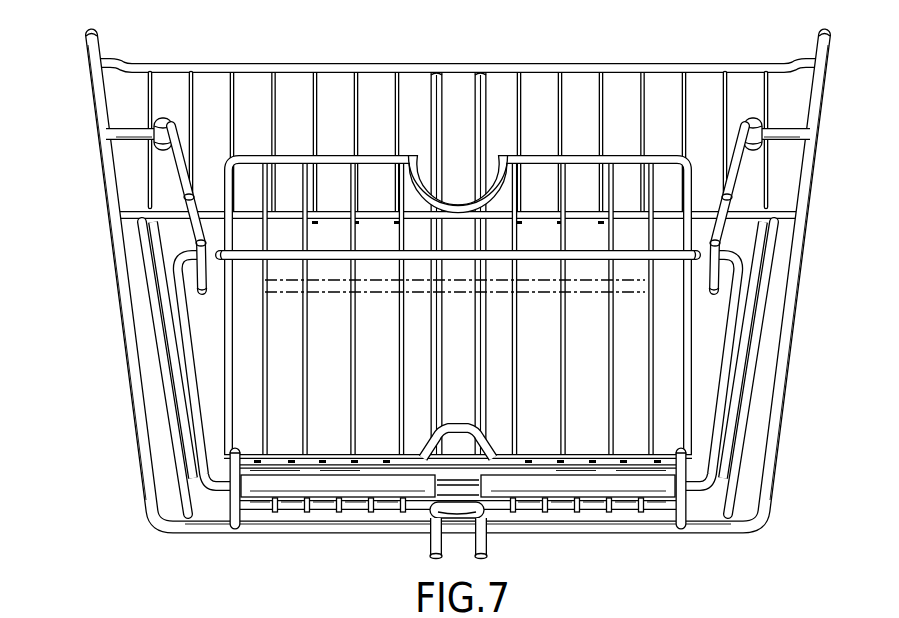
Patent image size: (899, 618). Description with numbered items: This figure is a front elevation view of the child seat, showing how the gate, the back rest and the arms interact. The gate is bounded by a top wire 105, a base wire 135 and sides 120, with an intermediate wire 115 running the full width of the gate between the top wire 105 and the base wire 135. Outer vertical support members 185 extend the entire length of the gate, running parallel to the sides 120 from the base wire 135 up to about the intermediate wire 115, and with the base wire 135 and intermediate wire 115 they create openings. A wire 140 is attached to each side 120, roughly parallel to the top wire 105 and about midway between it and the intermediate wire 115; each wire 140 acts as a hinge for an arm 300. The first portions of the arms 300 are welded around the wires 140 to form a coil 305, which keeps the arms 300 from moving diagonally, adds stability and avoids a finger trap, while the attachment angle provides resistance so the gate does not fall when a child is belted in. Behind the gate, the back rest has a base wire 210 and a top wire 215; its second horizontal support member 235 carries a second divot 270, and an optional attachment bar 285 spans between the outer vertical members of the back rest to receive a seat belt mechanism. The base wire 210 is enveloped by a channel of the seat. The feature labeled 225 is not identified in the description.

The top wire 105 is at (667, 62).
The intermediate wire 115 is at (137, 224).
The sides 120 is at (785, 363).
The base wire 135 is at (602, 523).
The wire 140 is at (792, 129).
The outer vertical support members 185 is at (740, 413).
The base wire 210 is at (696, 488).
The top wire 215 is at (332, 153).
The notch 225 is at (458, 197).
The second horizontal support member 235 is at (290, 450).
The second divot 270 is at (458, 431).
The attachment bar 285 is at (620, 294).
The arm 300 is at (746, 184).
The coil 305 is at (750, 152).